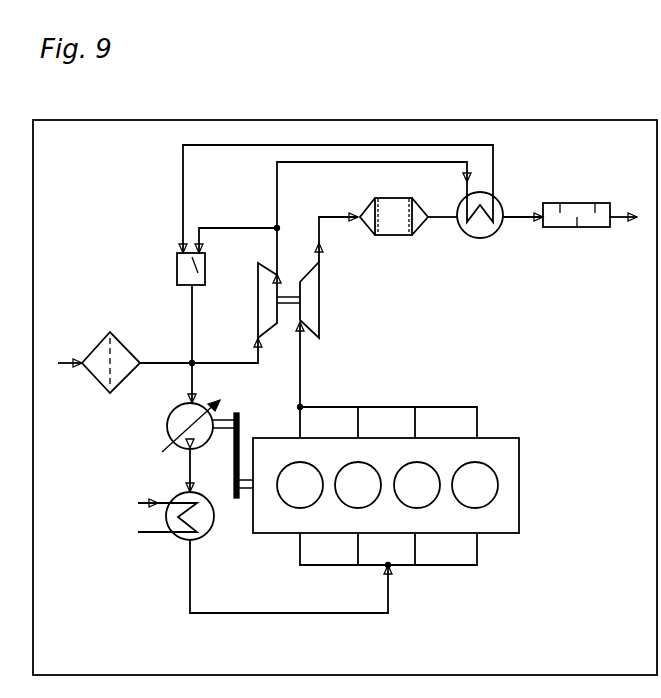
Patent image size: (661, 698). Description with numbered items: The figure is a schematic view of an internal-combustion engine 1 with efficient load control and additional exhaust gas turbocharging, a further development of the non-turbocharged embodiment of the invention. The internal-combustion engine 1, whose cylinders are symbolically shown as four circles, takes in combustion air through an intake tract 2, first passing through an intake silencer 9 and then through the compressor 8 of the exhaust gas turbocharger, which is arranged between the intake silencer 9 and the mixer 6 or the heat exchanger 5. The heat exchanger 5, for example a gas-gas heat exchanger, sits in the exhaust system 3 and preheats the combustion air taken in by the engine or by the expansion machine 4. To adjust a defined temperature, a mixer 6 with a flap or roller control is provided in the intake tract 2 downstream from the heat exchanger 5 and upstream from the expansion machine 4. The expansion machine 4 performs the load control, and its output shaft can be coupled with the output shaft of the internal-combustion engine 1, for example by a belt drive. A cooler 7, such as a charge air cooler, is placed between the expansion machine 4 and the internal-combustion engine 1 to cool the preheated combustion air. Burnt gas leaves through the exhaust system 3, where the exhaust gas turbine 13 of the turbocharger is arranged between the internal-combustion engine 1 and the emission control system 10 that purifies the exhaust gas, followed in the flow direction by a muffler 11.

The internal-combustion engine 1 is at (523, 478).
The intake tract 2 is at (108, 577).
The exhaust system 3 is at (522, 169).
The expansion machine 4 is at (168, 415).
The heat exchanger 5 is at (483, 240).
The mixer 6 is at (207, 280).
The cooler 7 is at (210, 538).
The compressor 8 is at (253, 308).
The intake silencer 9 is at (127, 343).
The emission control system 10 is at (393, 240).
The muffler 11 is at (570, 230).
The exhaust gas turbine 13 is at (323, 305).